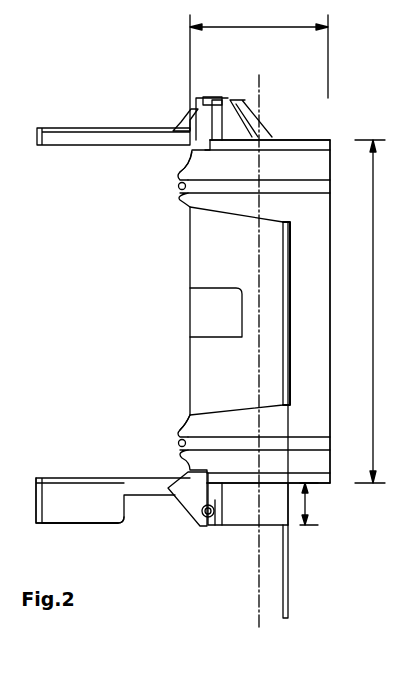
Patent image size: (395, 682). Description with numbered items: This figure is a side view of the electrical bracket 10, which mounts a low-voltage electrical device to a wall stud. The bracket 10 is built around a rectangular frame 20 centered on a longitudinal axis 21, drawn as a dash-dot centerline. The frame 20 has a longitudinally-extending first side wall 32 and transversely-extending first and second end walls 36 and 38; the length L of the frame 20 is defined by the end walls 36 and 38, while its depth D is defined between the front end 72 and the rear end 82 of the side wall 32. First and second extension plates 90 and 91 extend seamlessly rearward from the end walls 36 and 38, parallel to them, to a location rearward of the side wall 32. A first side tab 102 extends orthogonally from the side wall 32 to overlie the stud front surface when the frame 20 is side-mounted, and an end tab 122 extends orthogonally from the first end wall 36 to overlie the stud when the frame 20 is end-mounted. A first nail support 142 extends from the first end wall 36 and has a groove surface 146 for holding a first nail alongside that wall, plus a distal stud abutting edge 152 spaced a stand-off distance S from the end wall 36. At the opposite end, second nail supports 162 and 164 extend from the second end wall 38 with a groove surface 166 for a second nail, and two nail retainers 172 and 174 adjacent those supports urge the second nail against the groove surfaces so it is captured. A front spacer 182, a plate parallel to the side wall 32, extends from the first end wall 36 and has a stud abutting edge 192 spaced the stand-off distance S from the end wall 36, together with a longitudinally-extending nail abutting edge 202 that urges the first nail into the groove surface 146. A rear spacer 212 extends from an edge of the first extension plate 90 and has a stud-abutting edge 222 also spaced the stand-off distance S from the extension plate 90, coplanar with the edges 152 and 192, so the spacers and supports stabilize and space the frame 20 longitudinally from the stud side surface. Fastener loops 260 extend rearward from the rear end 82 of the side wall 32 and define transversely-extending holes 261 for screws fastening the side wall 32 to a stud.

The electrical bracket 10 is at (347, 80).
The rectangular frame 20 is at (336, 138).
The longitudinal axis 21 is at (259, 628).
The first side wall 32 is at (255, 311).
The first end wall 36 is at (332, 484).
The second end wall 38 is at (310, 140).
The front end 72 is at (330, 345).
The rear end 82 is at (190, 352).
The first extension plate 90 is at (118, 478).
The second extension plate 91 is at (75, 147).
The first side tab 102 is at (290, 382).
The end tab 122 is at (290, 588).
The first nail support 142 is at (185, 507).
The groove surface 146 is at (202, 512).
The stud abutting edge 152 is at (208, 520).
The second nail support 162 is at (183, 127).
The second nail support 164 is at (217, 100).
The groove surface 166 is at (200, 110).
The nail retainer 172 is at (205, 103).
The nail retainer 174 is at (248, 117).
The front spacer 182 is at (260, 527).
The stud abutting edge 192 is at (237, 517).
The nail abutting edge 202 is at (222, 525).
The rear spacer 212 is at (53, 498).
The stud-abutting edge 222 is at (61, 527).
The fastener loop 260 is at (170, 200).
The hole 261 is at (176, 184).
The depth D is at (259, 68).
The length L is at (371, 311).
The stand-off distance S is at (311, 504).